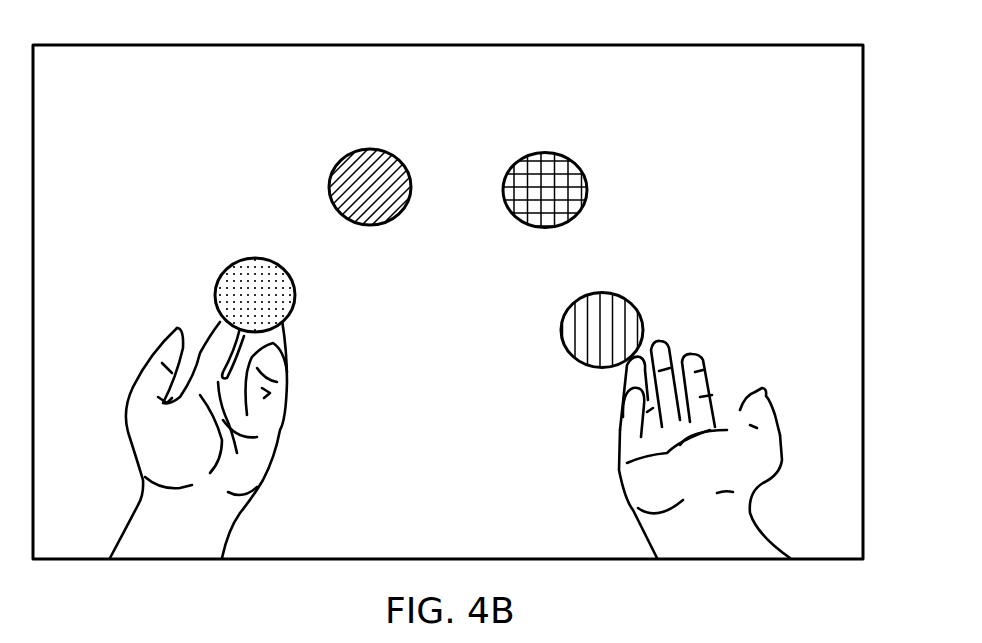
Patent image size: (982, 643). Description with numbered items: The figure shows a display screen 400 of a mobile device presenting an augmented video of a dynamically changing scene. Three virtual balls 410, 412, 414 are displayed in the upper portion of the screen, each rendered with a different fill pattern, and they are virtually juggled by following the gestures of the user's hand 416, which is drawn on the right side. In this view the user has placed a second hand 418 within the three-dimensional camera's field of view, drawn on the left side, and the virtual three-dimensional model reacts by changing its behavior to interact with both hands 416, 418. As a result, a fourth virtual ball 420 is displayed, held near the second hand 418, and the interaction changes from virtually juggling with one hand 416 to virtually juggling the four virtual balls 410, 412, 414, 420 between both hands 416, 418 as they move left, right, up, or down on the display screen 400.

The display screen 400 is at (614, 45).
The virtual ball 410 is at (638, 313).
The virtual ball 412 is at (397, 152).
The virtual ball 414 is at (578, 168).
The user's hand 416 is at (743, 457).
The second hand 418 is at (255, 463).
The fourth virtual ball 420 is at (240, 258).